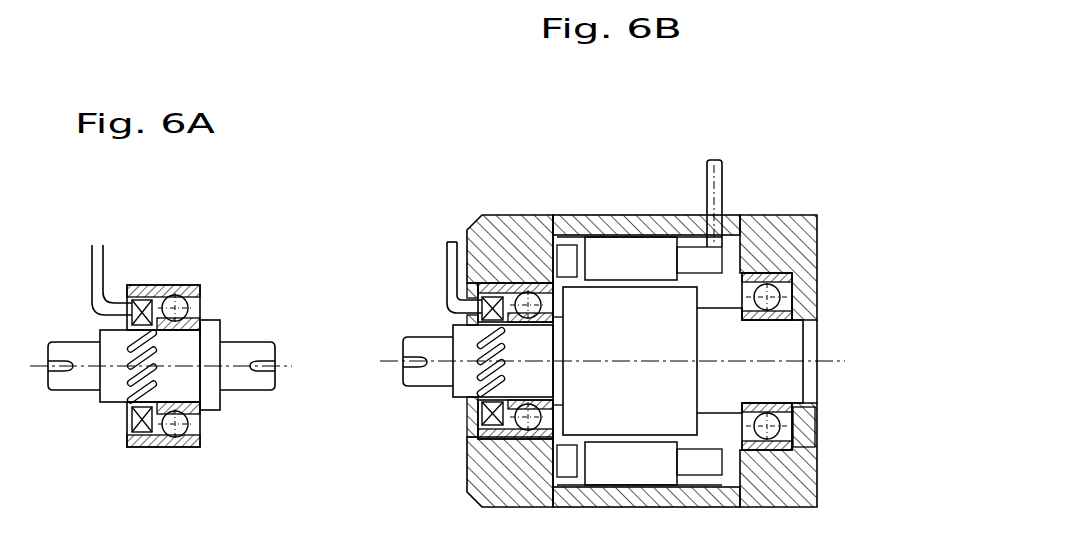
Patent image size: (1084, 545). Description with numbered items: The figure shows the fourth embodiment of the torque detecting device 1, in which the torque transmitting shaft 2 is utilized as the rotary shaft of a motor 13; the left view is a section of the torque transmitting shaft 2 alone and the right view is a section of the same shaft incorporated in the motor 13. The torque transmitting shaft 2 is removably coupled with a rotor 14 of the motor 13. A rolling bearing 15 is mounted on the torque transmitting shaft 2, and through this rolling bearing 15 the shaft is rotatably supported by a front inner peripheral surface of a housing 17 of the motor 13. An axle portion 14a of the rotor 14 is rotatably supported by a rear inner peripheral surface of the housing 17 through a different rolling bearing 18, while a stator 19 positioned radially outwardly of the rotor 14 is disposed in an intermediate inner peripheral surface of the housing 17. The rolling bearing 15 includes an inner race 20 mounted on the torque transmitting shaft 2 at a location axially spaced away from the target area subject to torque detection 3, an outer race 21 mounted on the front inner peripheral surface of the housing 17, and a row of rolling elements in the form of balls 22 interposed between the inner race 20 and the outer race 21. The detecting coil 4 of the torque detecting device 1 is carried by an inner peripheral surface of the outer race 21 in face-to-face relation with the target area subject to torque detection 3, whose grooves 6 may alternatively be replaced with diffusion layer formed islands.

In FIG. 6A, the torque detecting device 1 is at (67, 282).
In FIG. 6B, the torque detecting device 1 is at (431, 299).
In FIG. 6A, the torque transmitting shaft 2 is at (77, 382).
In FIG. 6B, the torque transmitting shaft 2 is at (422, 383).
In FIG. 6A, the target area subject to torque detection 3 is at (113, 395).
In FIG. 6B, the target area subject to torque detection 3 is at (462, 397).
In FIG. 6A, the detecting coil 4 is at (135, 298).
In FIG. 6B, the detecting coil 4 is at (492, 284).
In FIG. 6A, the grooves 6 is at (156, 348).
In FIG. 6B, the grooves 6 is at (470, 388).
In FIG. 6B, the motor 13 is at (512, 180).
In FIG. 6B, the rotor 14 is at (631, 315).
In FIG. 6B, the axle portion 14a is at (788, 378).
In FIG. 6A, the rolling bearing 15 is at (228, 331).
In FIG. 6B, the rolling bearing 15 is at (533, 282).
In FIG. 6B, the housing 17 is at (598, 215).
In FIG. 6B, the rolling bearing 18 is at (763, 268).
In FIG. 6B, the stator 19 is at (684, 240).
In FIG. 6A, the inner race 20 is at (213, 349).
In FIG. 6A, the outer race 21 is at (163, 290).
In FIG. 6A, the balls 22 is at (190, 296).